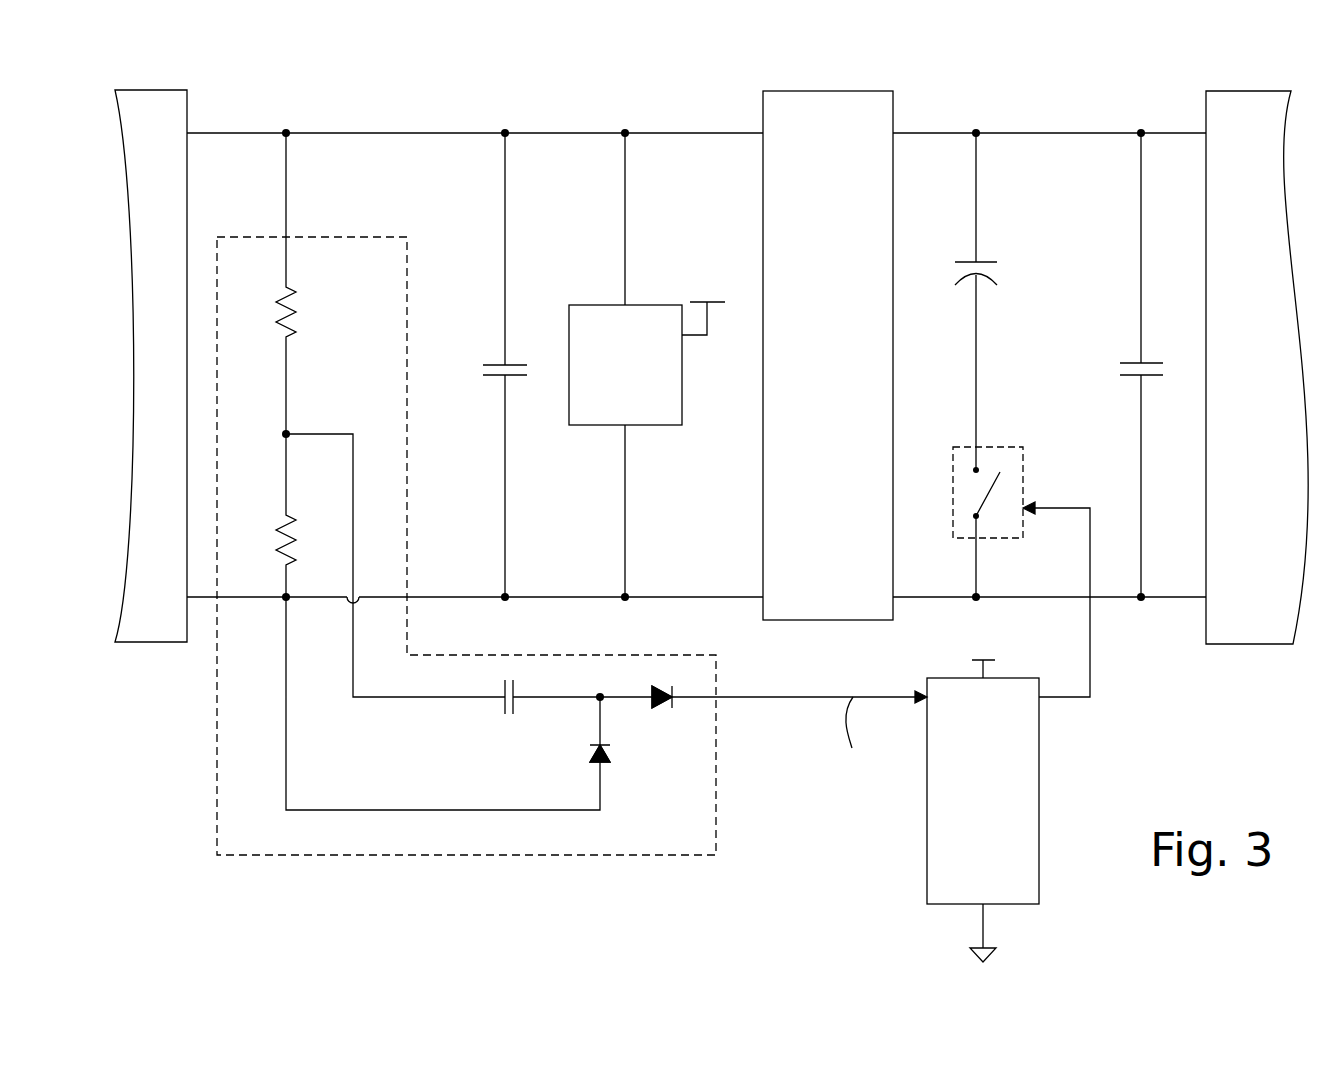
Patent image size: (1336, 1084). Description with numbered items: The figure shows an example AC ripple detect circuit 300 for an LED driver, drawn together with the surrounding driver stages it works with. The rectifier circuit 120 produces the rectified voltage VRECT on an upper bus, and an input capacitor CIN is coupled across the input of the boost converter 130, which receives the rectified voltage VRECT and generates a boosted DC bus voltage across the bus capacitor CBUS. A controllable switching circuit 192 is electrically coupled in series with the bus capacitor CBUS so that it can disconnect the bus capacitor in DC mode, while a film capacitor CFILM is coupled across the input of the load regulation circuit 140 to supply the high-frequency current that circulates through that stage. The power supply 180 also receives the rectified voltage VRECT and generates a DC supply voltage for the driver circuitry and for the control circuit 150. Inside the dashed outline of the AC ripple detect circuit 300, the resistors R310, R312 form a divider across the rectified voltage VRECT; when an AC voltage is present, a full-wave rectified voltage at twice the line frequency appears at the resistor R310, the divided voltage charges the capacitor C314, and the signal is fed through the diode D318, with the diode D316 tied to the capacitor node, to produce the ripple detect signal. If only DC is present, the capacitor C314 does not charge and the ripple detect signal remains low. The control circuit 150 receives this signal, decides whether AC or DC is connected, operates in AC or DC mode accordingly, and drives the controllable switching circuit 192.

The rectifier circuit 120 is at (130, 270).
The boost converter 130 is at (763, 213).
The load regulation circuit 140 is at (1206, 105).
The control circuit 150 is at (903, 732).
The power supply 180 is at (572, 305).
The controllable switching circuit 192 is at (1023, 455).
The AC ripple detect circuit 300 is at (365, 856).
The resistor R310 is at (290, 335).
The resistor R312 is at (275, 538).
The capacitor C314 is at (500, 705).
The diode D316 is at (595, 752).
The diode D318 is at (657, 704).
The input capacitor CIN is at (500, 365).
The bus capacitor CBUS is at (1010, 238).
The film capacitor CFILM is at (1132, 363).
The rectified voltage VRECT is at (264, 128).